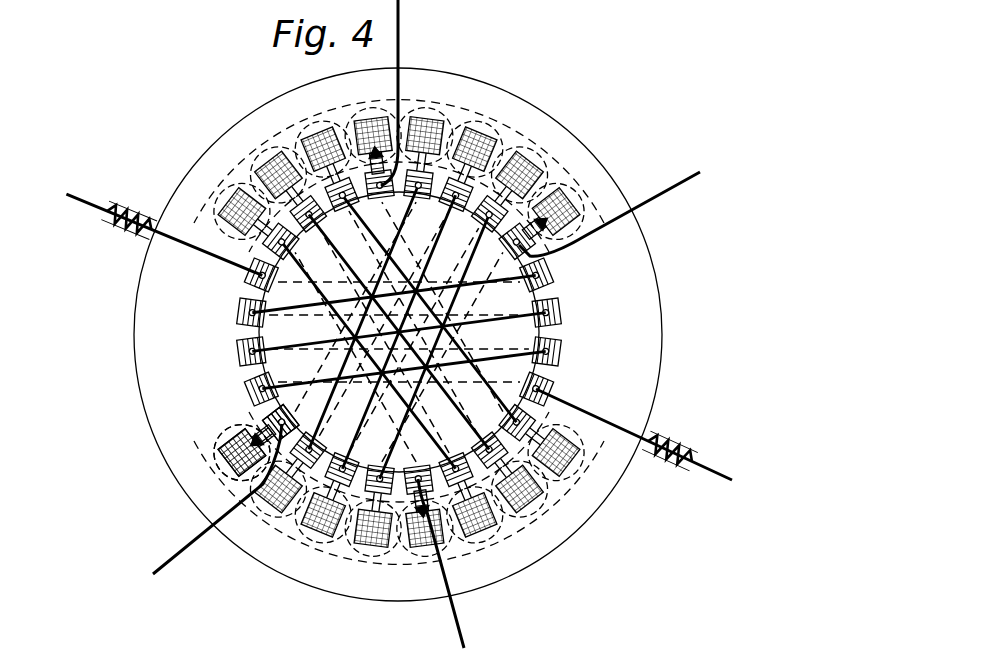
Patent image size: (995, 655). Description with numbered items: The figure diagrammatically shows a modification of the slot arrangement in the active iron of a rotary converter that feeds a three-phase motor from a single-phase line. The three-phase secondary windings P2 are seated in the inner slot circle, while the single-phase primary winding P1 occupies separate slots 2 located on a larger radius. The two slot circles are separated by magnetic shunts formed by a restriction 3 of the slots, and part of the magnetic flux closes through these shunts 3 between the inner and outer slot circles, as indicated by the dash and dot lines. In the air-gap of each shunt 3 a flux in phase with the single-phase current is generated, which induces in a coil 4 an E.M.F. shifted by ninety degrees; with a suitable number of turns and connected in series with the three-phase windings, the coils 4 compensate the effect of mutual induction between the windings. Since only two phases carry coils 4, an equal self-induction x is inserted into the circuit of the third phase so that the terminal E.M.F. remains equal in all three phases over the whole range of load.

The separate slots 2 is at (317, 138).
The restriction of the slots 3 is at (497, 185).
The coil 4 is at (375, 146).
The primary winding P1 is at (233, 200).
The three-phase windings P2 is at (421, 184).
The self-induction x is at (399, 328).